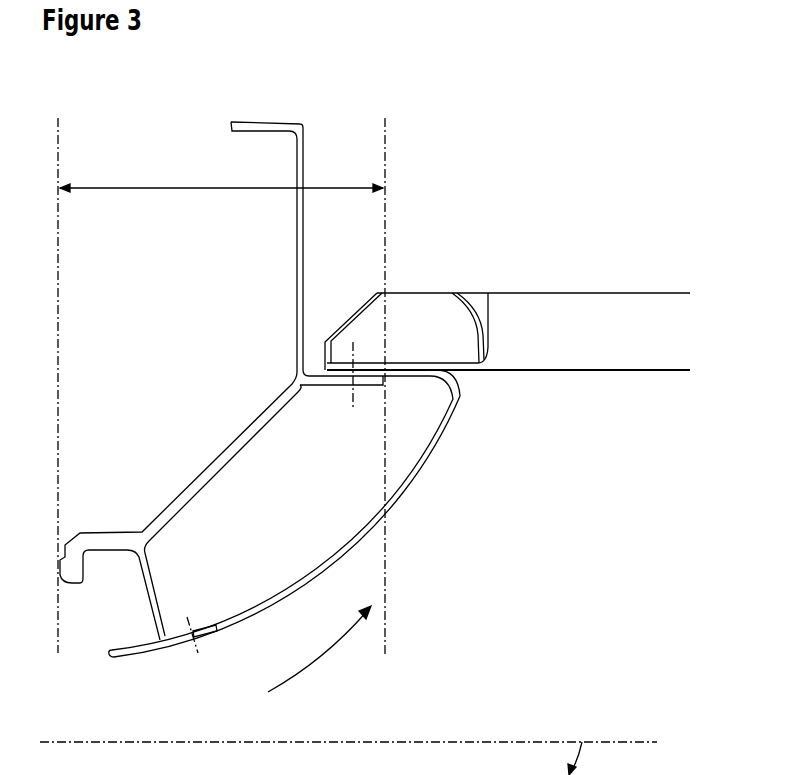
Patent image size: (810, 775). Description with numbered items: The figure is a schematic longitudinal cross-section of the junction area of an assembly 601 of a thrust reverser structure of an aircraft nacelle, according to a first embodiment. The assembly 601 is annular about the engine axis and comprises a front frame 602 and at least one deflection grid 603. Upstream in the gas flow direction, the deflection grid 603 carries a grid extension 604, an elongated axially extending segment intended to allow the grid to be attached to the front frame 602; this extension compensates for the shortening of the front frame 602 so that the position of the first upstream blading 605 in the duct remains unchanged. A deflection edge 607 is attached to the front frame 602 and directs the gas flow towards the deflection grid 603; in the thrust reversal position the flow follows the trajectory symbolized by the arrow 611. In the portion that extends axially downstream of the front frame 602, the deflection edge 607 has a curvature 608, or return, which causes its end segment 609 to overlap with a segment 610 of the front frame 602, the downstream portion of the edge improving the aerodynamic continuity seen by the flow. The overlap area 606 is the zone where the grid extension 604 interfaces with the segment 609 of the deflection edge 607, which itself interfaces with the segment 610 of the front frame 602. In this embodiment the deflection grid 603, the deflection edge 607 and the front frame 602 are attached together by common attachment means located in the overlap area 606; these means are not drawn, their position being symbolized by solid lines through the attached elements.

The assembly 601 is at (430, 82).
The front frame 602 is at (235, 452).
The deflection grid 603 is at (598, 302).
The grid extension 604 is at (340, 343).
The first upstream blading 605 is at (492, 343).
The overlap area 606 is at (373, 285).
The deflection edge 607 is at (350, 547).
The curvature 608 is at (460, 397).
The segment of the deflection edge 609 is at (370, 383).
The segment of the front frame 610 is at (328, 392).
The arrow 611 is at (319, 663).